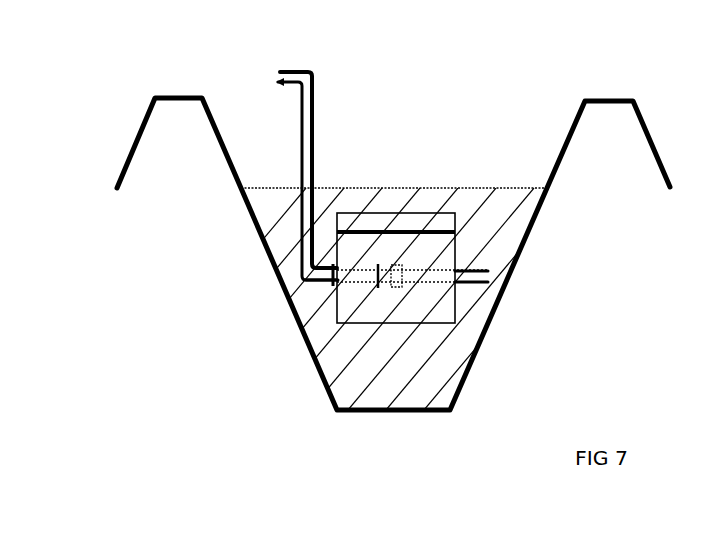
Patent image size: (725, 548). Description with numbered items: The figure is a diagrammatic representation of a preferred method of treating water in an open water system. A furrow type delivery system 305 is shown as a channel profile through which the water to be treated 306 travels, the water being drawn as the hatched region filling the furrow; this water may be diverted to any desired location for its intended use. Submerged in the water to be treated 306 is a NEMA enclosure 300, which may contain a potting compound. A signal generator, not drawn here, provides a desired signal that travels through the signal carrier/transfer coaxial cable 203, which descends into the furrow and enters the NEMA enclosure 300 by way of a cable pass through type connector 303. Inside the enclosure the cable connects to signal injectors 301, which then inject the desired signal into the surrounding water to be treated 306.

The furrow type delivery system 305 is at (138, 135).
The water to be treated 306 is at (348, 375).
The NEMA enclosure 300 is at (433, 308).
The signal carrier/transfer coaxial cable 203 is at (355, 272).
The cable pass through type connector 303 is at (333, 282).
The signal injectors 301 is at (437, 273).